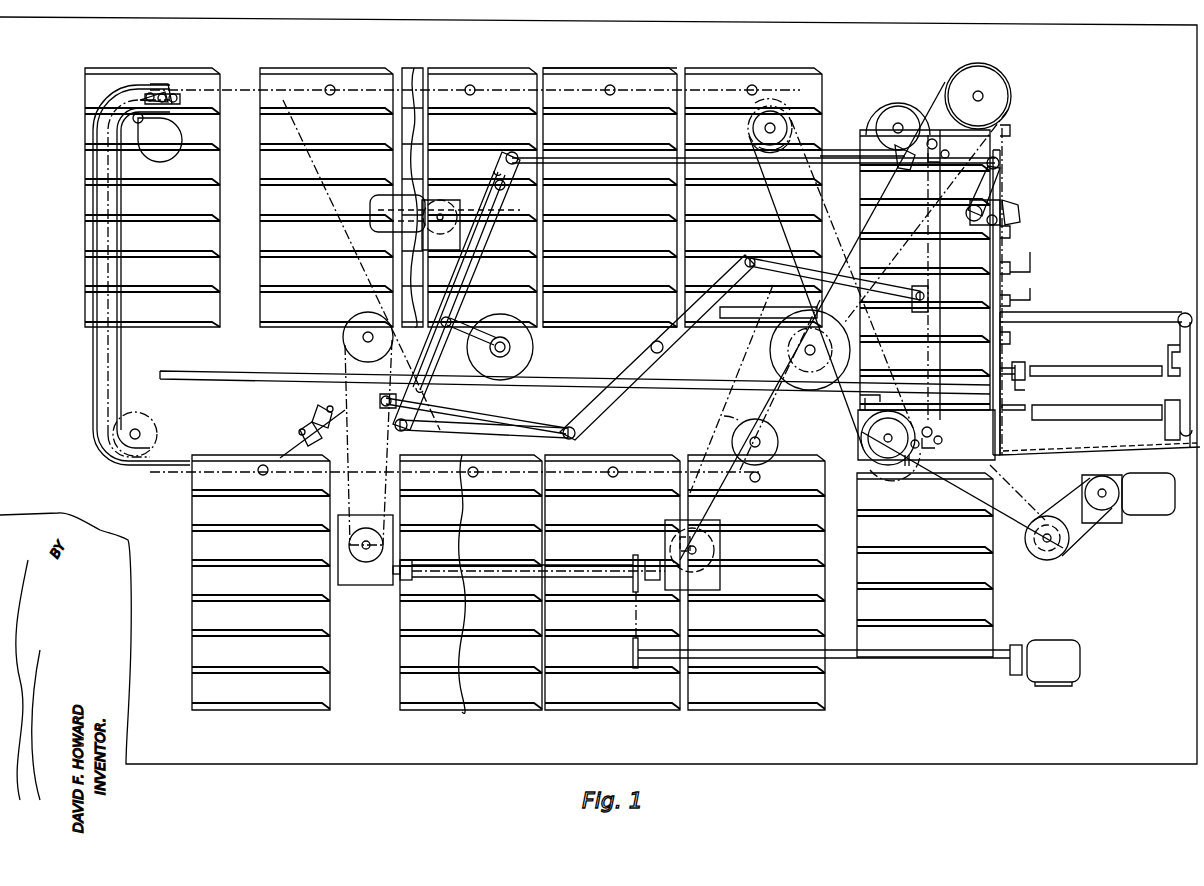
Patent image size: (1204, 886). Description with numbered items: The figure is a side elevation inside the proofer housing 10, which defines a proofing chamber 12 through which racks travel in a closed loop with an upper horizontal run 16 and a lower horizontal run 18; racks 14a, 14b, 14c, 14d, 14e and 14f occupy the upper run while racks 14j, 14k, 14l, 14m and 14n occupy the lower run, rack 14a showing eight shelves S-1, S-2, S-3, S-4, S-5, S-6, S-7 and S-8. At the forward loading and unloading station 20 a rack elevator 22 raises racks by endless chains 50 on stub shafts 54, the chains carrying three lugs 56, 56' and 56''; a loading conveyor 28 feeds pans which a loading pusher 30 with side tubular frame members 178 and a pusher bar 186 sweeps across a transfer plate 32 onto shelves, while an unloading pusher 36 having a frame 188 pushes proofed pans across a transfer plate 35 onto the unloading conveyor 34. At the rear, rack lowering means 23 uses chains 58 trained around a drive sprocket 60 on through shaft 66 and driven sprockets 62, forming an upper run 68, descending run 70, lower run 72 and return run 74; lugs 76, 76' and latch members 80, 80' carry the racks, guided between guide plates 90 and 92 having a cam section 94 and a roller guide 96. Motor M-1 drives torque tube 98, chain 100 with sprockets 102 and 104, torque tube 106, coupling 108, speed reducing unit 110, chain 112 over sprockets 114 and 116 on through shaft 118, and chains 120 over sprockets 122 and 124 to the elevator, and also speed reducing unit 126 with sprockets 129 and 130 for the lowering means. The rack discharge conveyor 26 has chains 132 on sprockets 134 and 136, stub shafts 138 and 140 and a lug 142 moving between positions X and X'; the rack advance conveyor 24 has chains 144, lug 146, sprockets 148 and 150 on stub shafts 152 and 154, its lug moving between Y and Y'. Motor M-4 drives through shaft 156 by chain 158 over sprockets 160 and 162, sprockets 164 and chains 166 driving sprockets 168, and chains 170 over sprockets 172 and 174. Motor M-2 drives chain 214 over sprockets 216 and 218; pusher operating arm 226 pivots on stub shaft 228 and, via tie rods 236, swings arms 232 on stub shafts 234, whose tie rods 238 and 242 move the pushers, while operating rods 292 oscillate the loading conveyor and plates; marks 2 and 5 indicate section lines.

The housing 10 is at (840, 24).
The proofing chamber 12 is at (576, 55).
The rack 14a is at (1005, 250).
The rack 14b is at (812, 76).
The rack 14c is at (648, 70).
The rack 14d is at (470, 70).
The rack 14e is at (335, 70).
The rack 14f is at (170, 70).
The rack 14j is at (272, 712).
The rack 14k is at (470, 712).
The rack 14l is at (623, 712).
The rack 14m is at (783, 712).
The rack 14n is at (994, 605).
The upper horizontal run 16 is at (412, 55).
The lower horizontal run 18 is at (396, 731).
The loading and unloading station 20 is at (1118, 301).
The rack elevator 22 is at (948, 78).
The rack lowering means 23 is at (85, 270).
The rack advance conveyor 24 is at (800, 418).
The rack discharge conveyor 26 is at (880, 100).
The loading conveyor 28 is at (1095, 366).
The loading pusher 30 is at (1180, 312).
The transfer plate 32 is at (1018, 362).
The unloading conveyor 34 is at (1090, 404).
The transfer plate 35 is at (1030, 402).
The unloading pusher 36 is at (694, 385).
The endless chains 50 is at (1012, 118).
The stub shafts 54 is at (985, 93).
The lug 56 is at (953, 148).
The lug 56' is at (945, 433).
The lug 56'' is at (1040, 212).
The endless chains 58 is at (318, 168).
The drive sprocket 60 is at (352, 318).
The driven sprockets 62 is at (160, 120).
The through shaft 66 is at (362, 337).
The horizontal upper run 68 is at (258, 55).
The vertical descending run 70 is at (60, 321).
The horizontal lower run 72 is at (251, 408).
The return run 74 is at (363, 203).
The lug 76 is at (160, 71).
The lug 76' is at (308, 434).
The latch member 80 is at (139, 70).
The latch member 80' is at (306, 407).
The guide plate 90 is at (125, 362).
The guide plate 92 is at (95, 360).
The curved cam section 94 is at (170, 112).
The curved rack roller guide 96 is at (112, 470).
The torque tube 98 is at (850, 660).
The chain 100 is at (633, 614).
The sprocket 102 is at (634, 565).
The sprocket 104 is at (633, 652).
The torque tube 106 is at (578, 556).
The flexible coupling 108 is at (410, 560).
The speed reducing unit 110 is at (722, 578).
The chain 112 is at (720, 525).
The sprocket 114 is at (716, 545).
The sprocket 116 is at (770, 347).
The through shaft 118 is at (805, 352).
The chains 120 is at (822, 250).
The sprockets 122 is at (875, 300).
The sprockets 124 is at (1000, 70).
The speed reducing unit 126 is at (368, 585).
The sprocket 129 is at (366, 528).
The sprocket 130 is at (345, 350).
The endless chains 132 is at (830, 152).
The drive sprocket 134 is at (775, 105).
The driven sprocket 136 is at (893, 100).
The stub shaft 138 is at (765, 128).
The stub shaft 140 is at (892, 126).
The lug 142 is at (905, 165).
The endless chains 144 is at (845, 415).
The lug 146 is at (915, 450).
The driven sprocket 148 is at (732, 440).
The drive sprocket 150 is at (886, 466).
The stub shaft 152 is at (750, 480).
The stub shaft 154 is at (890, 430).
The through shaft 156 is at (1065, 550).
The chain 158 is at (1062, 494).
The sprocket 160 is at (1118, 516).
The sprocket 162 is at (1052, 555).
The sprockets 164 is at (1036, 552).
The chains 166 is at (1015, 500).
The sprockets 168 is at (862, 452).
The chains 170 is at (782, 198).
The sprockets 172 is at (872, 410).
The sprockets 174 is at (780, 150).
The tubular frame members 178 is at (1130, 308).
The pusher bar 186 is at (1168, 350).
The rectangular frame 188 is at (538, 380).
The chain 214 is at (492, 262).
The sprocket 216 is at (448, 195).
The sprocket 218 is at (534, 345).
The pusher operating arm 226 is at (498, 232).
The stub shaft 228 is at (508, 190).
The pusher operating arms 232 is at (605, 412).
The stub shafts 234 is at (665, 347).
The tie rods 236 is at (475, 436).
The tie rods 238 is at (520, 424).
The tie rods 242 is at (760, 262).
The operating rods 292 is at (572, 158).
The gear head reduction motor M-1 is at (1045, 663).
The gear head reduction motor M-2 is at (445, 213).
The gear head reduction motor M-4 is at (1148, 494).
The shelf S-1 is at (1005, 130).
The shelf S-2 is at (1000, 163).
The shelf S-3 is at (1000, 197).
The shelf S-4 is at (1000, 232).
The shelf S-5 is at (1000, 268).
The shelf S-6 is at (1000, 300).
The shelf S-7 is at (1000, 338).
The shelf S-8 is at (1020, 370).
The full line position X is at (928, 275).
The phantom line rack release position X' is at (770, 76).
The full line position Y is at (895, 475).
The phantom line position Y' is at (718, 414).
The section line 2 is at (1018, 44).
The section line 5 is at (93, 142).